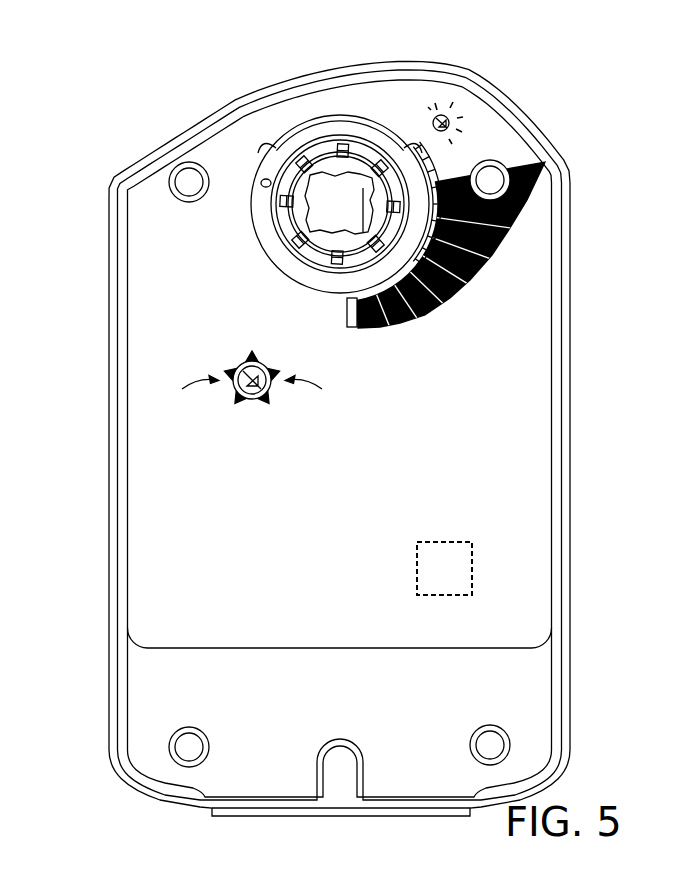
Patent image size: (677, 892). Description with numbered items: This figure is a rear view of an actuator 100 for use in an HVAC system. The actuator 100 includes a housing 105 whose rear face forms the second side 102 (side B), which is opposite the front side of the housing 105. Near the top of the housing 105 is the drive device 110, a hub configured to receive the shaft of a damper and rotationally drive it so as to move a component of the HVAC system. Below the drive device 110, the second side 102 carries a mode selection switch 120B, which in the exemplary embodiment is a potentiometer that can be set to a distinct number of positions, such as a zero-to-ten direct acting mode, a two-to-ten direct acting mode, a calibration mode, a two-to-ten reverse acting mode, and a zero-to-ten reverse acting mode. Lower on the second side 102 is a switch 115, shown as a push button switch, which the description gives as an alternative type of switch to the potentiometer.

The actuator 100 is at (86, 412).
The second side 102 is at (150, 575).
The housing 105 is at (572, 470).
The drive device 110 is at (333, 203).
The switch 115 is at (462, 562).
The mode selection switch 120B is at (219, 344).